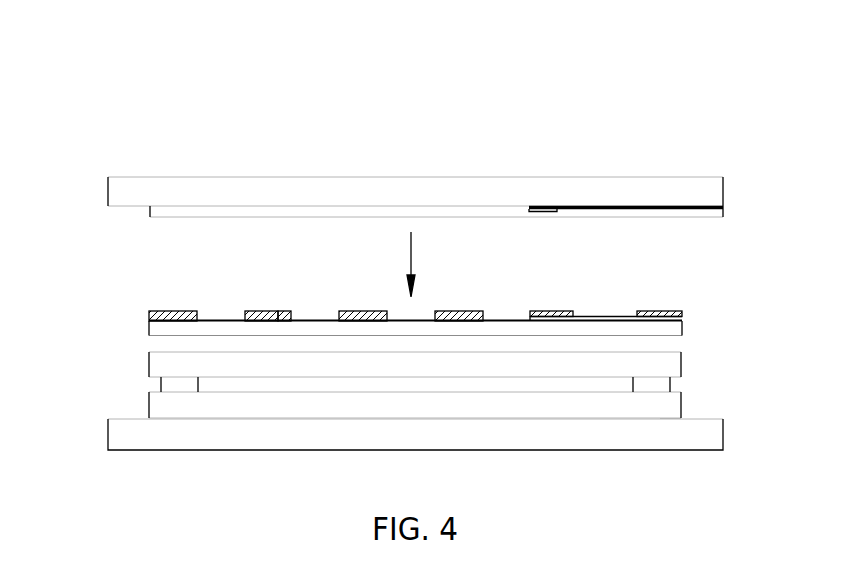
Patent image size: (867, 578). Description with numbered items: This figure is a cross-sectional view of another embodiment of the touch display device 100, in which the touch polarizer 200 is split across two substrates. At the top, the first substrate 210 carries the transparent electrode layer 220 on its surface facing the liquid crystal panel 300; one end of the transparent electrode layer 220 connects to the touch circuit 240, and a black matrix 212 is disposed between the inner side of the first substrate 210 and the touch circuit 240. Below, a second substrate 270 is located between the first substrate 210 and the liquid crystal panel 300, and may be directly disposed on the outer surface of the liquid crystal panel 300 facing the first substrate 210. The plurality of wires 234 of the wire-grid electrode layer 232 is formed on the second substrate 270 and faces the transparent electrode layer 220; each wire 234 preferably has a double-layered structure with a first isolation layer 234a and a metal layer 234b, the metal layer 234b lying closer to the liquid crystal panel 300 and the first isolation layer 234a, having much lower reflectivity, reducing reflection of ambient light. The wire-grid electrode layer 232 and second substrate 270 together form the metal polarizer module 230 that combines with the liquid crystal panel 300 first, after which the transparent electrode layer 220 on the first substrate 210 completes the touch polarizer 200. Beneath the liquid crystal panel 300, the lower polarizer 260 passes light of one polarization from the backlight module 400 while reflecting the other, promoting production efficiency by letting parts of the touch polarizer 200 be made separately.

The touch display device 100 is at (153, 90).
The touch polarizer 200 is at (736, 172).
The first substrate 210 is at (113, 192).
The black matrix 212 is at (688, 206).
The transparent electrode layer 220 is at (211, 211).
The circuit board 230 is at (687, 310).
The wire-grid electrode layer 232 is at (146, 316).
The wire 234 is at (358, 138).
The first isolation layer 234a is at (253, 312).
The metal layer 234b is at (278, 312).
The touch circuit 240 is at (610, 215).
The lower polarizer 260 is at (680, 419).
The second substrate 270 is at (158, 328).
The liquid crystal panel 300 is at (149, 352).
The backlight module 400 is at (115, 434).